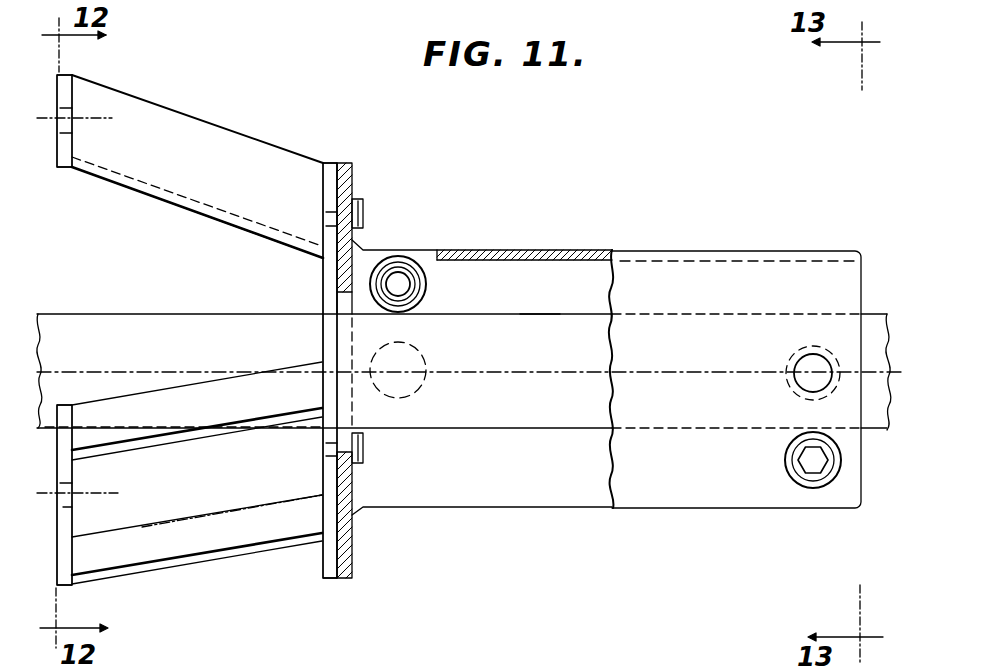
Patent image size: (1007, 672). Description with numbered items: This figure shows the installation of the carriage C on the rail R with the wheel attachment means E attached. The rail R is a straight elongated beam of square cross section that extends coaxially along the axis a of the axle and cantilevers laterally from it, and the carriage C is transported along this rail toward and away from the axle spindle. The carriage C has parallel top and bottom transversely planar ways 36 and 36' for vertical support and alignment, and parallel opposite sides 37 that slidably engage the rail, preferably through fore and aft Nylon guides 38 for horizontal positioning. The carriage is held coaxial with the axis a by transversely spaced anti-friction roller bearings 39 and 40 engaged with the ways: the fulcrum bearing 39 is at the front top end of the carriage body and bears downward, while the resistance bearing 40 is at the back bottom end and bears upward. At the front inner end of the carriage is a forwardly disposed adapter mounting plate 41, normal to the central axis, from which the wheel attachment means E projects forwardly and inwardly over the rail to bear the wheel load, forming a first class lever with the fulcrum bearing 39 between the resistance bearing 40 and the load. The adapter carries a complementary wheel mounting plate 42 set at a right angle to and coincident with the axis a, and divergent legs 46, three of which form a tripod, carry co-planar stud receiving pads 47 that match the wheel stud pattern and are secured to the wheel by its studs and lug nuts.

The top transversely planar way 36 is at (482, 332).
The bottom transversely planar way 36' is at (482, 472).
The side of carriage 37 is at (471, 372).
The Nylon guide 38 is at (400, 400).
The fulcrum bearing 39 is at (406, 257).
The resistance bearing 40 is at (800, 490).
The adapter mounting plate 41 is at (353, 182).
The wheel mounting plate 42 is at (322, 272).
The divergent leg 46 is at (134, 195).
The stud receiving pad 47 is at (72, 98).
The wheel attachment means E is at (280, 142).
The rail R is at (107, 313).
The carriage C is at (680, 250).
The axis a is at (538, 372).